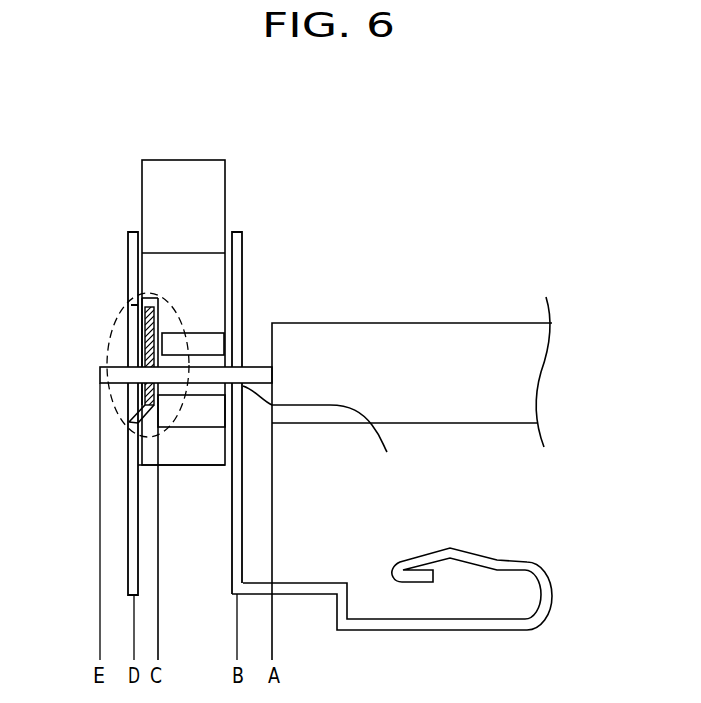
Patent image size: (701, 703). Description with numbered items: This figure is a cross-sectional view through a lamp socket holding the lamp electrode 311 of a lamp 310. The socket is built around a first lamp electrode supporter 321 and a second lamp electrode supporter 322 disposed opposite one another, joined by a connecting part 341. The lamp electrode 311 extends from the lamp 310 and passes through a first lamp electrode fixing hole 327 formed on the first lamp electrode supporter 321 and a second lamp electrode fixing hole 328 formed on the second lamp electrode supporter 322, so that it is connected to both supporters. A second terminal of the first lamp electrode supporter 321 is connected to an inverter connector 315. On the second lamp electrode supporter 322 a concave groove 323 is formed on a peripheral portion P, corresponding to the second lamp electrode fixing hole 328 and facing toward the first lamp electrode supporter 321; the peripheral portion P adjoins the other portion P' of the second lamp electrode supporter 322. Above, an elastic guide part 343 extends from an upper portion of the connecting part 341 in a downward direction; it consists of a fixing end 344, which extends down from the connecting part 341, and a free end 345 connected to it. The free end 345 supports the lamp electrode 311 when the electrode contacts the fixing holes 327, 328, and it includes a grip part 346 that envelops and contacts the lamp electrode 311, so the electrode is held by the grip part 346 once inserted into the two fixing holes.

The lamp 310 is at (528, 372).
The lamp electrode 311 is at (103, 373).
The inverter connector 315 is at (552, 597).
The first lamp electrode supporter 321 is at (243, 253).
The second lamp electrode supporter 322 is at (128, 250).
The concave groove 323 is at (142, 342).
The first lamp electrode fixing hole 327 is at (327, 434).
The second lamp electrode fixing hole 328 is at (131, 423).
The connecting part 341 is at (140, 293).
The elastic guide part 343 is at (225, 96).
The fixing end 344 is at (162, 177).
The free end 345 is at (195, 280).
The grip part 346 is at (198, 357).
The peripheral portion P is at (87, 429).
The other portion P' is at (87, 549).